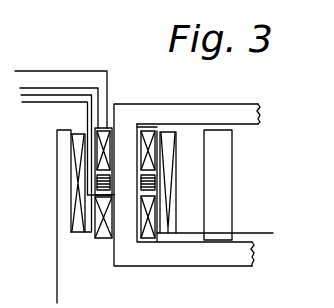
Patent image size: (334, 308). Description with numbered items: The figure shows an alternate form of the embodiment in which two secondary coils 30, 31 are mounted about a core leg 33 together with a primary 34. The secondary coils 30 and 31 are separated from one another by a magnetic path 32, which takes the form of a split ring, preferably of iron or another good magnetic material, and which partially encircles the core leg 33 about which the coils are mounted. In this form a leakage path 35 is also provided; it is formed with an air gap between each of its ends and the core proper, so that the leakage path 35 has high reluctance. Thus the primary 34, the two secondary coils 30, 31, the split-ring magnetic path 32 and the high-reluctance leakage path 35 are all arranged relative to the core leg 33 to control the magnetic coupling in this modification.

The secondary coil 30 is at (151, 131).
The secondary coil 31 is at (147, 235).
The magnetic path 32 is at (150, 182).
The core leg 33 is at (125, 237).
The primary 34 is at (171, 226).
The leakage path 35 is at (218, 215).